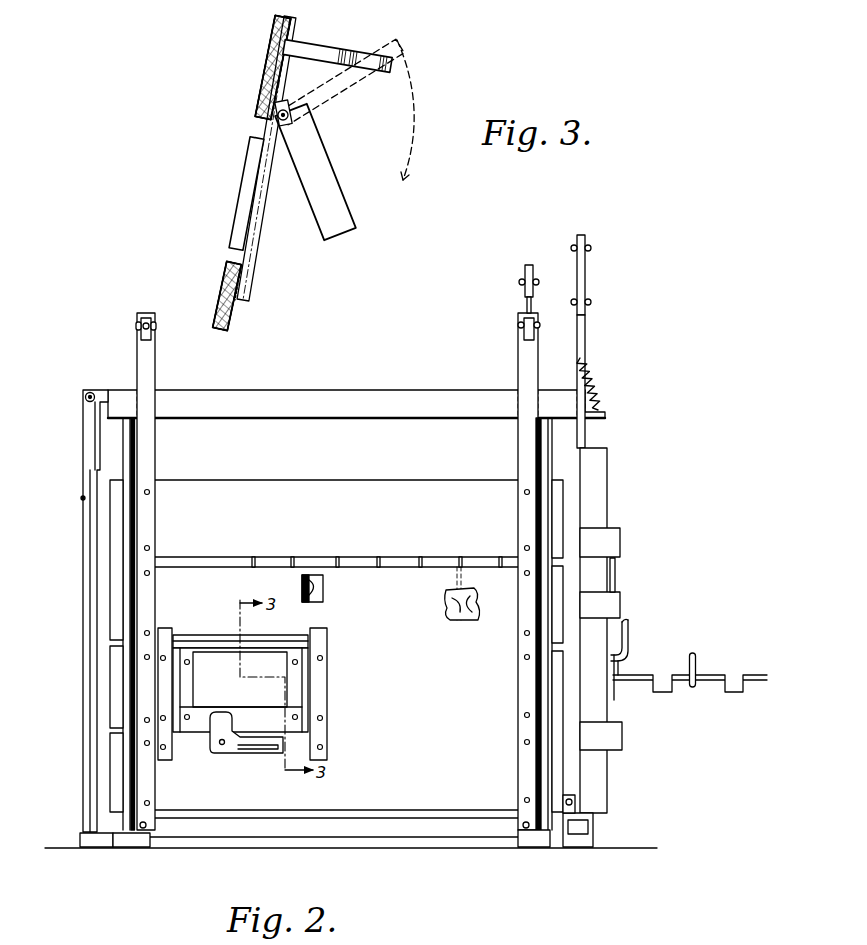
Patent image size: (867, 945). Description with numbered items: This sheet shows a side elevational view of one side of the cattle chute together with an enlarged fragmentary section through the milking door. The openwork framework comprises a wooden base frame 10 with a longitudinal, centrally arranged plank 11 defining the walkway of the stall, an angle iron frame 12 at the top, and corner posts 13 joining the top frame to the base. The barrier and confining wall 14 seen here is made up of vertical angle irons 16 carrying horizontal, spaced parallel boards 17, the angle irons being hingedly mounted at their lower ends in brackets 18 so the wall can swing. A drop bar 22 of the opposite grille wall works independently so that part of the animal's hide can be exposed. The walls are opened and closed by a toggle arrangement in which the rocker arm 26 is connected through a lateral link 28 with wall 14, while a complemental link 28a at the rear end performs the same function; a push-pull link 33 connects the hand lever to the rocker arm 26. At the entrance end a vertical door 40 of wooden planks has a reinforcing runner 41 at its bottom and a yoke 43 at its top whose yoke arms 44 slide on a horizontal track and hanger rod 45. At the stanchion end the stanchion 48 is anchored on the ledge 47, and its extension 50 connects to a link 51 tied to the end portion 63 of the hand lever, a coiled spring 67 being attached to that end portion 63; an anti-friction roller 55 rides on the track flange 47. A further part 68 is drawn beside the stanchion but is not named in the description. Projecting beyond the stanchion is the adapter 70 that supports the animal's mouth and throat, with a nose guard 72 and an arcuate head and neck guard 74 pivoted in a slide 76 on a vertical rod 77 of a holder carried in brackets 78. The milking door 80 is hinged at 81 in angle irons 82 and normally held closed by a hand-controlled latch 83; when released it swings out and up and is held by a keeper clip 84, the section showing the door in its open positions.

In FIG. 2, the base frame 10 is at (386, 850).
In FIG. 2, the plank 11 is at (446, 815).
In FIG. 2, the angle iron frame 12 is at (276, 383).
In FIG. 2, the corner posts 13 is at (123, 443).
In FIG. 3, the barrier and confining wall 14 is at (258, 318).
In FIG. 2, the barrier and confining wall 14 is at (366, 469).
In FIG. 2, the vertical angle irons 16 is at (155, 453).
In FIG. 3, the boards 17 is at (264, 76).
In FIG. 2, the boards 17 is at (280, 480).
In FIG. 2, the brackets 18 is at (143, 848).
In FIG. 2, the drop bar 22 is at (402, 558).
In FIG. 2, the rocker arm 26 is at (527, 305).
In FIG. 2, the lateral link 28 is at (526, 340).
In FIG. 2, the complemental link 28a is at (147, 314).
In FIG. 2, the push-pull link 33 is at (526, 267).
In FIG. 2, the vertical door 40 is at (77, 664).
In FIG. 2, the reinforcing runner 41 is at (100, 848).
In FIG. 2, the yoke 43 is at (82, 499).
In FIG. 2, the yoke arms 44 is at (83, 447).
In FIG. 2, the track and hanger rod 45 is at (88, 392).
In FIG. 2, the ledge 47 is at (594, 826).
In FIG. 2, the stanchion 48 is at (613, 464).
In FIG. 2, the extension 50 is at (586, 332).
In FIG. 2, the link 51 is at (586, 270).
In FIG. 2, the anti-friction roller 55 is at (564, 815).
In FIG. 2, the end portion 63 is at (577, 260).
In FIG. 2, the coiled spring 67 is at (596, 384).
In FIG. 2, the latch plate 68 is at (606, 488).
In FIG. 2, the adapter 70 is at (718, 667).
In FIG. 2, the nose guard 72 is at (692, 653).
In FIG. 2, the head and neck guard 74 is at (632, 628).
In FIG. 2, the slide 76 is at (618, 700).
In FIG. 2, the vertical rod 77 is at (616, 582).
In FIG. 2, the brackets 78 is at (620, 542).
In FIG. 3, the milking door 80 is at (353, 96).
In FIG. 2, the milking door 80 is at (224, 660).
In FIG. 3, the hinge 81 is at (290, 120).
In FIG. 2, the hinge 81 is at (190, 635).
In FIG. 3, the angle irons 82 is at (268, 246).
In FIG. 2, the angle irons 82 is at (165, 760).
In FIG. 2, the latch 83 is at (212, 746).
In FIG. 3, the keeper clip 84 is at (347, 48).
In FIG. 2, the keeper clip 84 is at (316, 576).